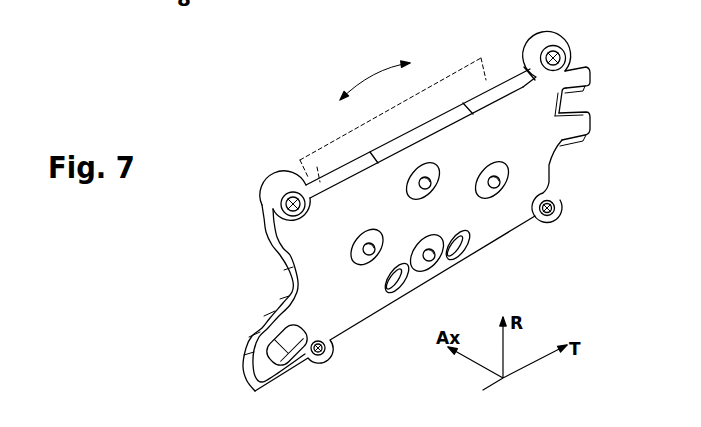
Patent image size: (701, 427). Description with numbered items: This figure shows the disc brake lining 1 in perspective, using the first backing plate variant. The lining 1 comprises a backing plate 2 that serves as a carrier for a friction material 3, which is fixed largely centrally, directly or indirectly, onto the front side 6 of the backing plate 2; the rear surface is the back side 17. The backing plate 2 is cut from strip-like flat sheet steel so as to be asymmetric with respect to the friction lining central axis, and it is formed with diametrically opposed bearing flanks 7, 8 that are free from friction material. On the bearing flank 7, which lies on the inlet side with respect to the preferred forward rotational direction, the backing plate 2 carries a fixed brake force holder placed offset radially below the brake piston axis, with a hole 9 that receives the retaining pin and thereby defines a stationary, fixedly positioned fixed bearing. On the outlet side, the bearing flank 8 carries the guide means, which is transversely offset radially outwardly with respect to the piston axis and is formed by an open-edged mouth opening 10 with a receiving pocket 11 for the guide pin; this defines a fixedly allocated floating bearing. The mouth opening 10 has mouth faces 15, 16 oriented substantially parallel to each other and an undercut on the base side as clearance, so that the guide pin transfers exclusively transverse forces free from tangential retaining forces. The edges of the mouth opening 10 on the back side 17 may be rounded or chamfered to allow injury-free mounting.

The disc brake lining 1 is at (243, 238).
The backing plate 2 is at (530, 244).
The friction material 3 is at (478, 64).
The front side 6 is at (263, 192).
The bearing flank 7 is at (286, 322).
The bearing flank 8 is at (587, 73).
The hole 9 is at (255, 357).
The open-edged mouth opening 10 is at (583, 107).
The receiving pocket 11 is at (560, 150).
The mouth face 15 is at (586, 97).
The mouth face 16 is at (584, 118).
The back side 17 is at (534, 135).